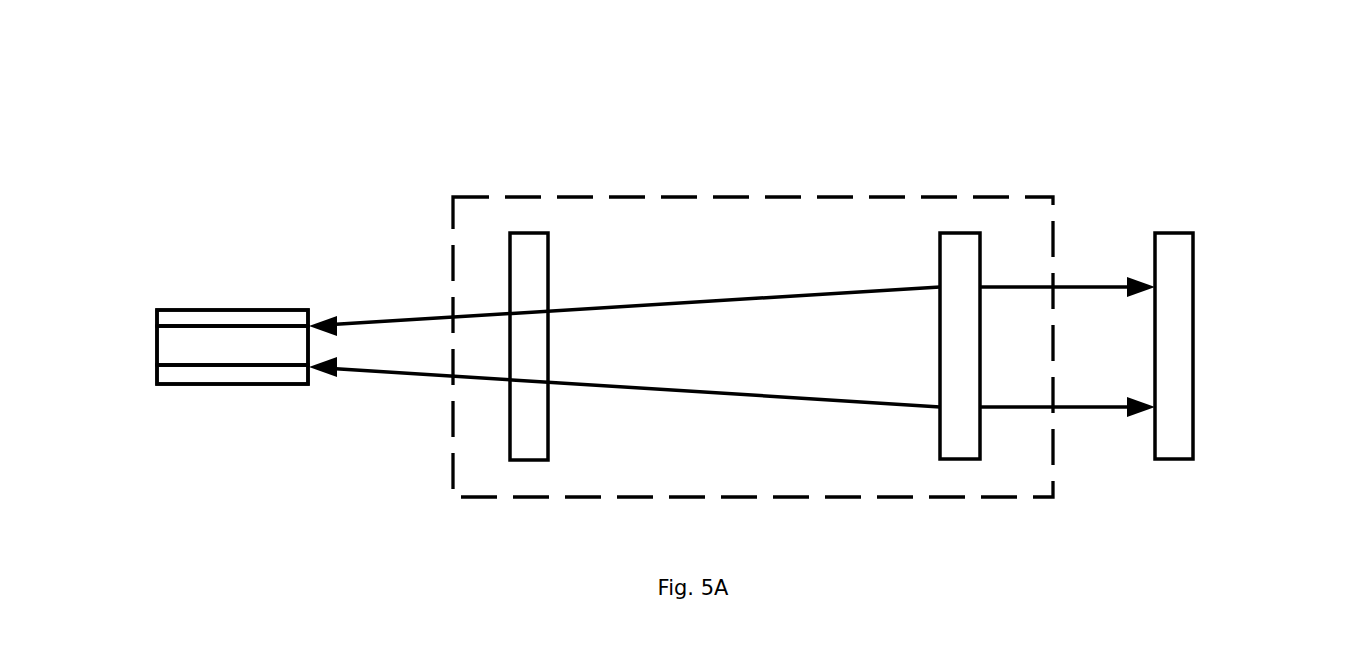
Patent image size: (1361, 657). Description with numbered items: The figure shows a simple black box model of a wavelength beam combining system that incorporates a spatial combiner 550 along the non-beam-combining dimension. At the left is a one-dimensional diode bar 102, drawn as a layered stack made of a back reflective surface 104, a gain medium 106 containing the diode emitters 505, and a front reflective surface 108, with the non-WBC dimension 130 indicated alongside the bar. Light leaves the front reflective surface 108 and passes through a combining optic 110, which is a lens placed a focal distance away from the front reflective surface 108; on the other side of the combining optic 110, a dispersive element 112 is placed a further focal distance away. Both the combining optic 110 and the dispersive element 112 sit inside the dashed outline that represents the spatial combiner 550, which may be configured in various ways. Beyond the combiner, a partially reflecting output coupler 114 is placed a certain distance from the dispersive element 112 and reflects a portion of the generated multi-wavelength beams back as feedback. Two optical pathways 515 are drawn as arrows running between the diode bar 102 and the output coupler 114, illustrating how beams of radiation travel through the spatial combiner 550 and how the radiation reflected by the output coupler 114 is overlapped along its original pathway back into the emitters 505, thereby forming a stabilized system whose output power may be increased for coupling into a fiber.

The one-dimensional diode bar 102 is at (163, 167).
The back reflective surface 104 is at (157, 310).
The gain medium 106 is at (220, 310).
The front reflective surface 108 is at (308, 310).
The combining optic 110 is at (535, 233).
The dispersive element 112 is at (963, 215).
The partially reflecting output coupler 114 is at (1192, 215).
The non-WBC dimension 130 is at (88, 354).
The emitters 505 is at (195, 328).
The optical pathways 515 is at (433, 315).
The spatial combiner 550 is at (828, 505).